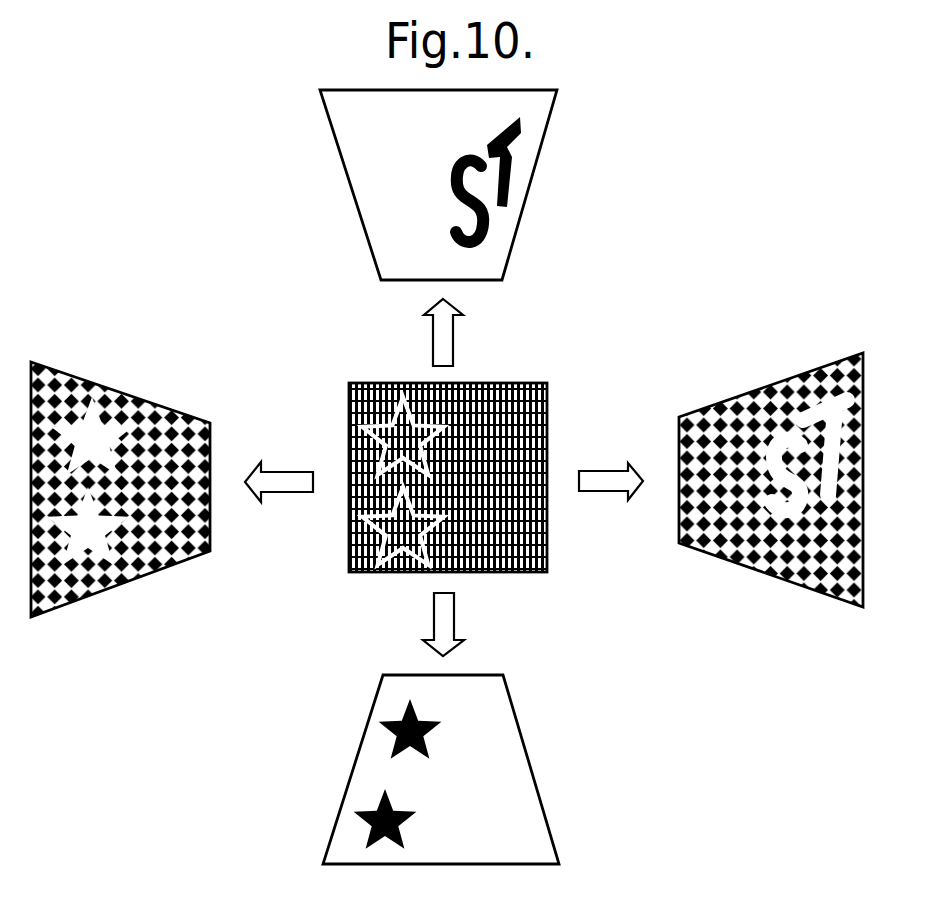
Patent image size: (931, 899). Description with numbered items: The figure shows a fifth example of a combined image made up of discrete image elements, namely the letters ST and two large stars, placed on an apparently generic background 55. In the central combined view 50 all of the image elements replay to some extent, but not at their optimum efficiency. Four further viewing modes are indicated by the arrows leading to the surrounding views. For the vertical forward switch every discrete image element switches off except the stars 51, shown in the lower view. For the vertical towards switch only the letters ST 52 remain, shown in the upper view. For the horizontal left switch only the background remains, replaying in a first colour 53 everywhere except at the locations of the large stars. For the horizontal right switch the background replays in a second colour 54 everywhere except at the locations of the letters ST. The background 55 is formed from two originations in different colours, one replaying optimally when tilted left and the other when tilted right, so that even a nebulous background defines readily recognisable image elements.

The combined view 50 is at (483, 508).
The stars 51 is at (392, 746).
The letters ST 52 is at (496, 224).
The background replaying in a first colour 53 is at (75, 567).
The background replaying in a second colour 54 is at (818, 557).
The background 55 is at (497, 572).